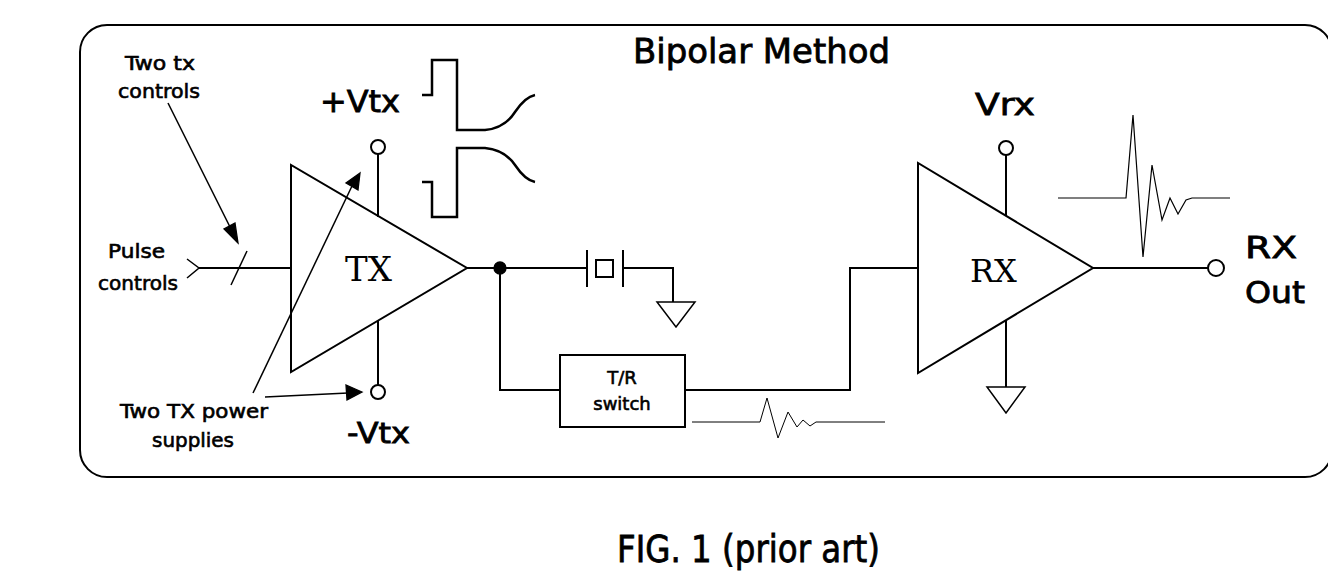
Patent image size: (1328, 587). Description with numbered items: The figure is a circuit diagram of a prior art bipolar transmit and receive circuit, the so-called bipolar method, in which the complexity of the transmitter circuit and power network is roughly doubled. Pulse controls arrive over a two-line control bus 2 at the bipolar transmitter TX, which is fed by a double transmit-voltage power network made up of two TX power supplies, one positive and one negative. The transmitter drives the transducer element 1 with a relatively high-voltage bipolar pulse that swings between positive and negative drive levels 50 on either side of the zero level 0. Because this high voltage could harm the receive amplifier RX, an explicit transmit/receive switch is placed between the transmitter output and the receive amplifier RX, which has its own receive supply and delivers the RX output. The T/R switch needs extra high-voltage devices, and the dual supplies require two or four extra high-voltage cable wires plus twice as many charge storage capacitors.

The pulse control bus (two lines) 2 is at (245, 266).
The bipolar drive voltage level (+/-50 V) 50 is at (468, 137).
The zero voltage level 0 is at (486, 153).
The transducer element E1 1 is at (603, 243).